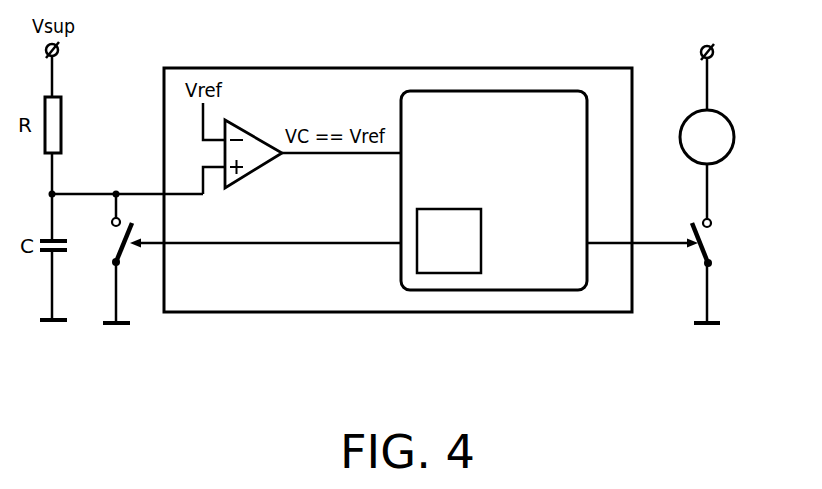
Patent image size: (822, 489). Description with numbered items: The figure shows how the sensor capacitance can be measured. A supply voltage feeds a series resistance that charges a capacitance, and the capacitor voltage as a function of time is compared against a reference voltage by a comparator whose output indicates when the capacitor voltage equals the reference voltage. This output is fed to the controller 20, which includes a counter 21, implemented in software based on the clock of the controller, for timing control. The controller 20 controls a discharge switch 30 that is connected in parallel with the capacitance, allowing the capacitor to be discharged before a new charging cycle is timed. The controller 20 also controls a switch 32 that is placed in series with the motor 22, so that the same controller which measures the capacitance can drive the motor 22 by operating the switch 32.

The controller 20 is at (495, 290).
The counter 21 is at (450, 209).
The motor 22 is at (734, 137).
The discharge switch 30 is at (118, 243).
The switch 32 is at (708, 238).